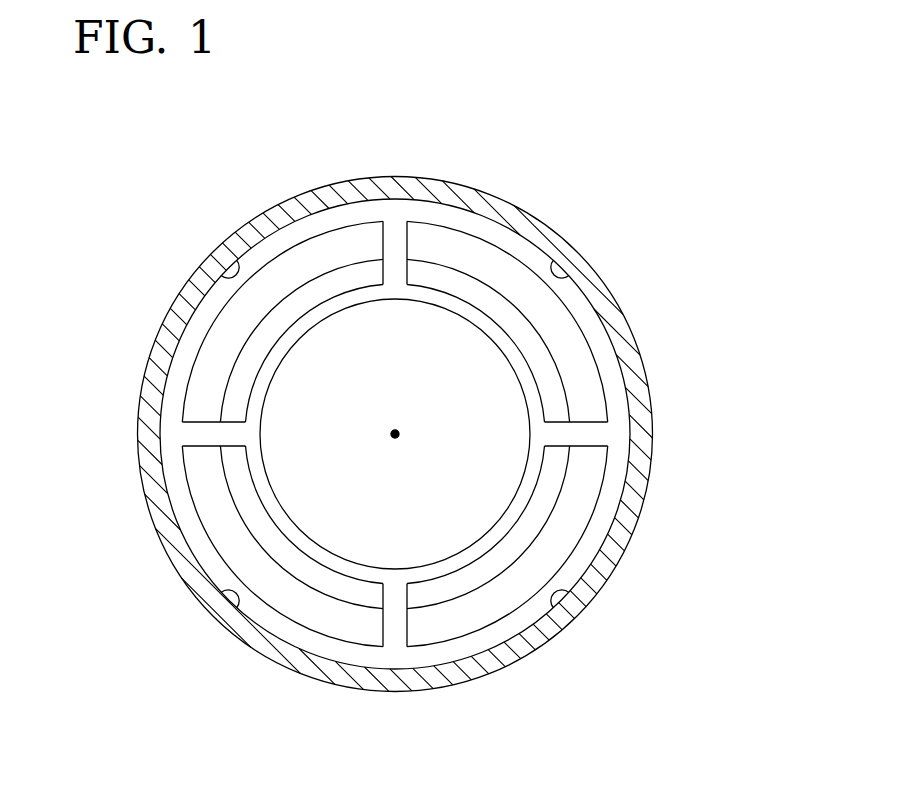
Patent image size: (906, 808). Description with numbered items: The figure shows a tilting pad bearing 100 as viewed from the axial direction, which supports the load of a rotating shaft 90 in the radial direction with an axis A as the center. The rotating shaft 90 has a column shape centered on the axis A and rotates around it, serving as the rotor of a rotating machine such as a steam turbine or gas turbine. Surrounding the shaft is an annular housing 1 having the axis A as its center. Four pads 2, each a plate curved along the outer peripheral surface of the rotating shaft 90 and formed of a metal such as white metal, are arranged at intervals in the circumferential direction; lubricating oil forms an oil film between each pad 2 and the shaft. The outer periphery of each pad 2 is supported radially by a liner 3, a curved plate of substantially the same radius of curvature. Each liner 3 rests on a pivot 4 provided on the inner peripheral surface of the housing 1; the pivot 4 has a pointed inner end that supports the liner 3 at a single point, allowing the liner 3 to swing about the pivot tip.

The tilting pad bearing 100 is at (678, 156).
The annular housing 1 is at (508, 217).
The pad 2 is at (355, 275).
The liner 3 is at (308, 262).
The pivot 4 is at (231, 270).
The rotating shaft 90 is at (495, 400).
The axis A is at (401, 438).